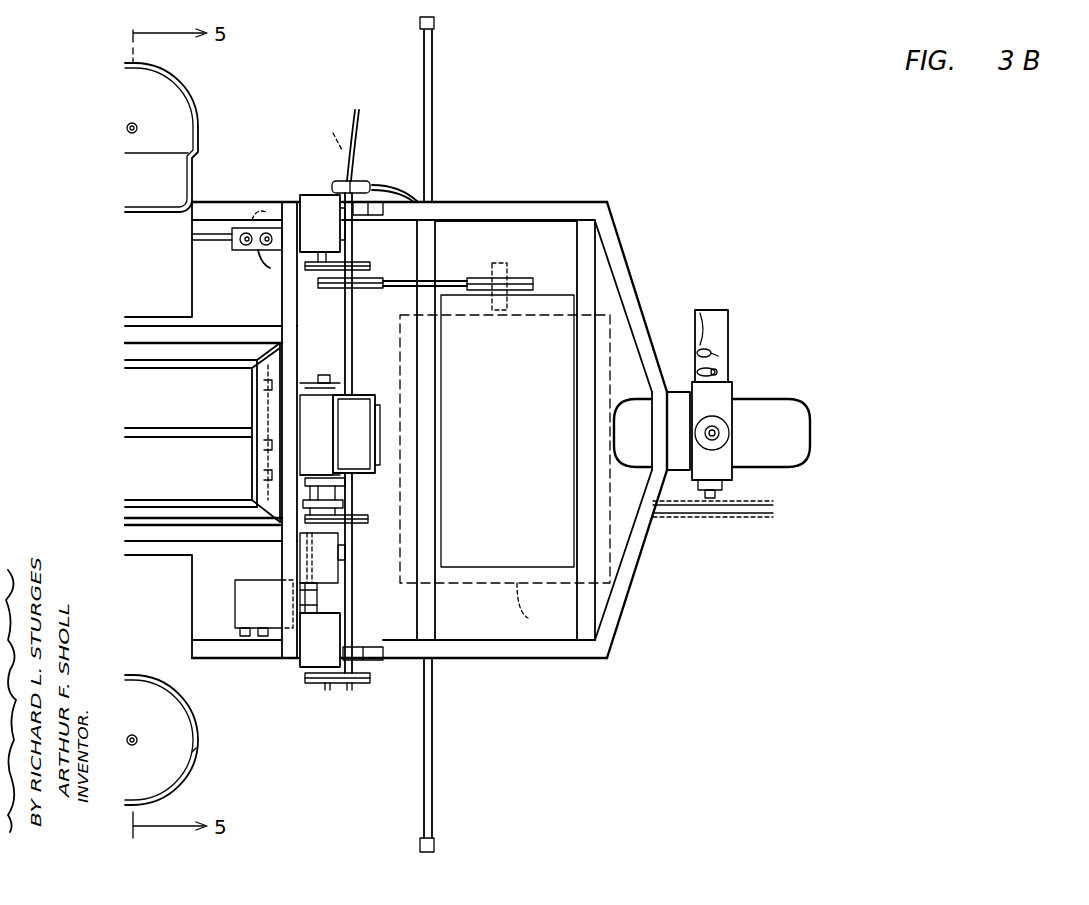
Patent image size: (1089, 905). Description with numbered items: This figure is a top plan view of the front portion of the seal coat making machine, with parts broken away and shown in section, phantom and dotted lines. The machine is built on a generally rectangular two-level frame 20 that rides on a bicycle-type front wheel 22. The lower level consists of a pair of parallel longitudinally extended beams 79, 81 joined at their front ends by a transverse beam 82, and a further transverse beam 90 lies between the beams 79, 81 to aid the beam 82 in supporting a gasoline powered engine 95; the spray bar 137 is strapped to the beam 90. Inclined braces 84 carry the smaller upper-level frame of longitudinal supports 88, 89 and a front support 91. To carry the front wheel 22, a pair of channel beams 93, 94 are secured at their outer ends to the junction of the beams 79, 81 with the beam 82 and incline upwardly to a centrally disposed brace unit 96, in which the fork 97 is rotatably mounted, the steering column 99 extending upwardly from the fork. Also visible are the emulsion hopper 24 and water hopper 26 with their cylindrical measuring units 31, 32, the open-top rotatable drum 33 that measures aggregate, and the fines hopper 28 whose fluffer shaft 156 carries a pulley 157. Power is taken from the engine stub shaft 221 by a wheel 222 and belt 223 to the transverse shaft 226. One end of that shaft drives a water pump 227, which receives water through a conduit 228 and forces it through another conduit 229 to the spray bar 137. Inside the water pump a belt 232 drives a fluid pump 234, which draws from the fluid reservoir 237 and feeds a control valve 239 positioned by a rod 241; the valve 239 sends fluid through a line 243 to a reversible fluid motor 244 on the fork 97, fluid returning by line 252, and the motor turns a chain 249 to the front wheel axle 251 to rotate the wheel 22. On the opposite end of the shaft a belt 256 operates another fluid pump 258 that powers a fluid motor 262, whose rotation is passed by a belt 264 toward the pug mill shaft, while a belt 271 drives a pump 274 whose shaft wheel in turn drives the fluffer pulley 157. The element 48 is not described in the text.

The frame 20 is at (431, 407).
The front wheel 22 is at (792, 398).
The second hopper 24 is at (150, 615).
The third hopper 26 is at (142, 268).
The fines hopper 28 is at (357, 407).
The cylindrical measuring unit 31 is at (180, 790).
The cylindrical measuring unit 32 is at (191, 105).
The rotatable drum 33 is at (145, 478).
The window opening 48 is at (217, 433).
The longitudinally extended beam 79 is at (472, 207).
The longitudinally extended beam 81 is at (443, 655).
The transverse beam 82 is at (582, 255).
The inclined braces 84 is at (290, 291).
The longitudinal support 88 is at (145, 330).
The longitudinal support 89 is at (145, 531).
The transverse beam 90 is at (427, 608).
The front support 91 is at (292, 348).
The channel beam 93 is at (620, 277).
The channel beam 94 is at (632, 560).
The gasoline powered engine 95 is at (533, 608).
The brace unit 96 is at (672, 368).
The fork 97 is at (722, 395).
The steering column 99 is at (715, 428).
The spray bar 137 is at (424, 792).
The shaft 156 is at (330, 492).
The pulley 157 is at (347, 504).
The engine stub shaft 221 is at (507, 267).
The wheel 222 is at (480, 278).
The belt 223 is at (370, 292).
The transverse shaft 226 is at (348, 368).
The water pump 227 is at (365, 180).
The conduit 228 is at (355, 136).
The conduit 229 is at (388, 185).
The belt 232 is at (343, 263).
The fluid pump 234 is at (318, 195).
The fluid reservoir 237 is at (497, 555).
The control valve 239 is at (240, 228).
The rod 241 is at (228, 242).
The line 243 is at (700, 347).
The reversible fluid motor 244 is at (725, 325).
The chain 249 is at (747, 518).
The front wheel axle 251 is at (725, 498).
The line 252 is at (715, 362).
The belt 256 is at (340, 688).
The fluid pump 258 is at (313, 650).
The fluid motor 262 is at (243, 608).
The belt 264 is at (313, 592).
The belt 271 is at (357, 528).
The pump 274 is at (327, 575).